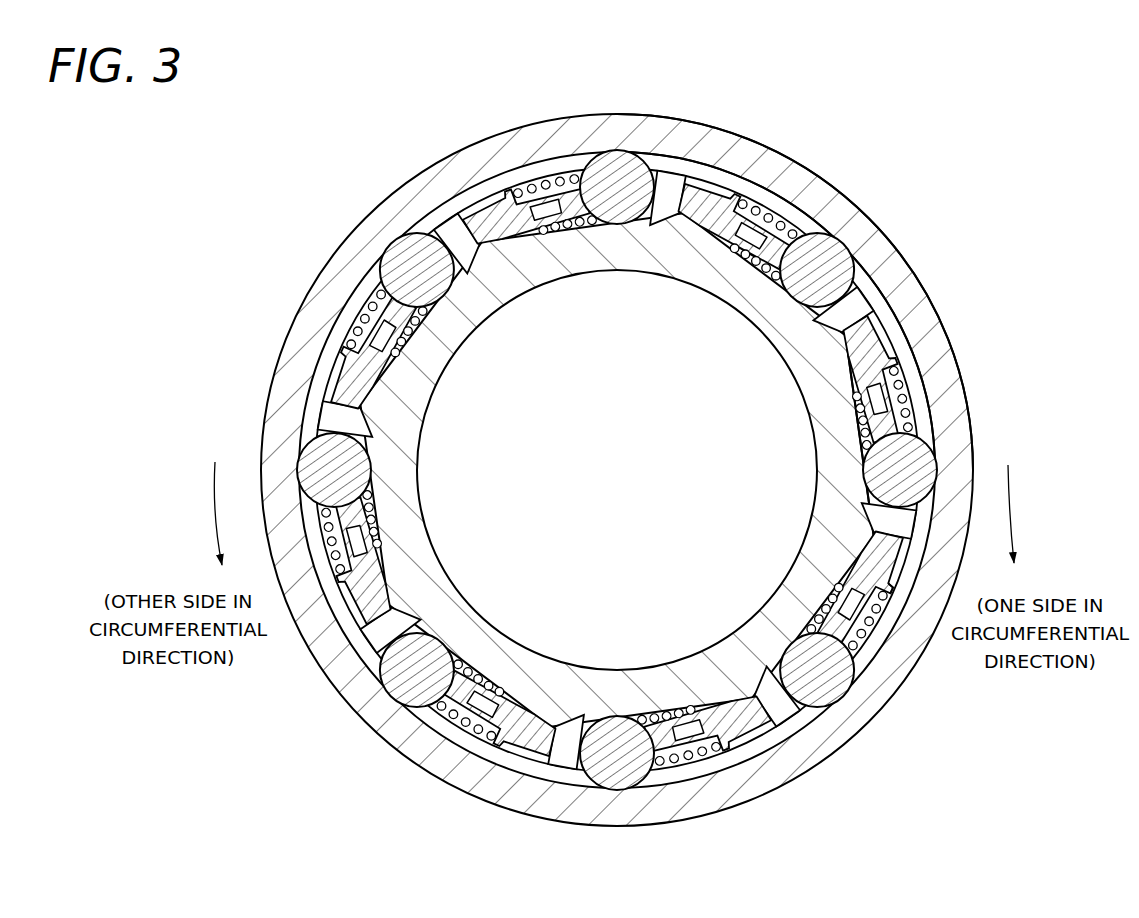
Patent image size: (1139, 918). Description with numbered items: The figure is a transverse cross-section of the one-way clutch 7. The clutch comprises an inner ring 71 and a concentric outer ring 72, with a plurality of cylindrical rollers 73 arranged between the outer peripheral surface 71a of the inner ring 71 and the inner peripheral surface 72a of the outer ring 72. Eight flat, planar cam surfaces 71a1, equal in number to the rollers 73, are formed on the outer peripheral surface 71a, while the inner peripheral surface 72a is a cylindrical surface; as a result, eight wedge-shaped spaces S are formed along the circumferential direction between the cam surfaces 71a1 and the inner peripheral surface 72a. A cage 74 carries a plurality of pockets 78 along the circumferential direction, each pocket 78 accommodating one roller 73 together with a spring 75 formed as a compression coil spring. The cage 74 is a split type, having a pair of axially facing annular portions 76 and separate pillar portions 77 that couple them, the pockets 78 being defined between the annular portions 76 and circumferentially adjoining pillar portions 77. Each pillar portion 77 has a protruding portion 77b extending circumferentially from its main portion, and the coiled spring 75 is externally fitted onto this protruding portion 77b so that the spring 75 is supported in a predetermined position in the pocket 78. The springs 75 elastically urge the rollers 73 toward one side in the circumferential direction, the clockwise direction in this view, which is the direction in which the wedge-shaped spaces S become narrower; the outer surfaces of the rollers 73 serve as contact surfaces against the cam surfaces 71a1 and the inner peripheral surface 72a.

The one-way clutch 7 is at (930, 280).
The inner ring 71 is at (782, 375).
The outer peripheral surface 71a is at (842, 368).
The cam surface 71a1 is at (735, 246).
The outer ring 72 is at (592, 112).
The inner peripheral surface 72a is at (733, 165).
The roller 73 is at (803, 221).
The cage 74 is at (889, 320).
The spring 75 is at (762, 213).
The annular portion 76 is at (892, 398).
The pillar portion 77 is at (690, 187).
The protruding portion 77b is at (889, 381).
The pocket 78 is at (943, 262).
The wedge-shaped space S is at (800, 212).